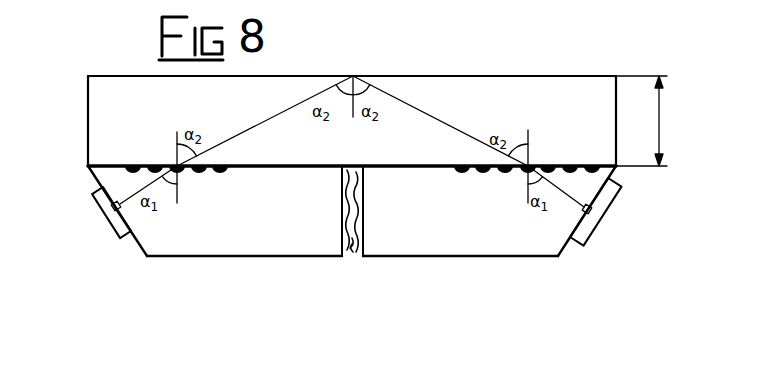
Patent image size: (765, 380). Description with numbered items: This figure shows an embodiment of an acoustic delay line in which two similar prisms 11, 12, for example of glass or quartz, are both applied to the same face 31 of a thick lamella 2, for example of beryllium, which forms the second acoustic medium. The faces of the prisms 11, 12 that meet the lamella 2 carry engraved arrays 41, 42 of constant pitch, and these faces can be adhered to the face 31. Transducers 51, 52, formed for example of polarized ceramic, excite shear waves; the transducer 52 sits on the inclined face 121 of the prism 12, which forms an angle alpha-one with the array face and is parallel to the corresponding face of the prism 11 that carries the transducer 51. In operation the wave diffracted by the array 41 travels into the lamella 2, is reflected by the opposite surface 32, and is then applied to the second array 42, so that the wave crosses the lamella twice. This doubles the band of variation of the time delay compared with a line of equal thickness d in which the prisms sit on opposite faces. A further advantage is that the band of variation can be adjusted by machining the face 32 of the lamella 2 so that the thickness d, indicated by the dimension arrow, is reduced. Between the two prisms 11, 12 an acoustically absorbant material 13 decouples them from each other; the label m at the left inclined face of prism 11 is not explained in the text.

The lamella 2 is at (95, 98).
The face of lamella 31 is at (108, 163).
The face of lamella 32 is at (524, 78).
The thickness d is at (648, 121).
The array 41 is at (212, 173).
The array 42 is at (497, 172).
The transducer 51 is at (99, 209).
The transducer 52 is at (605, 198).
The prism 11 is at (195, 248).
The prism 12 is at (510, 247).
The acoustically absorbant material 13 is at (352, 257).
The face of prism 121 is at (562, 254).
The inclined face of left carrier part m is at (139, 246).